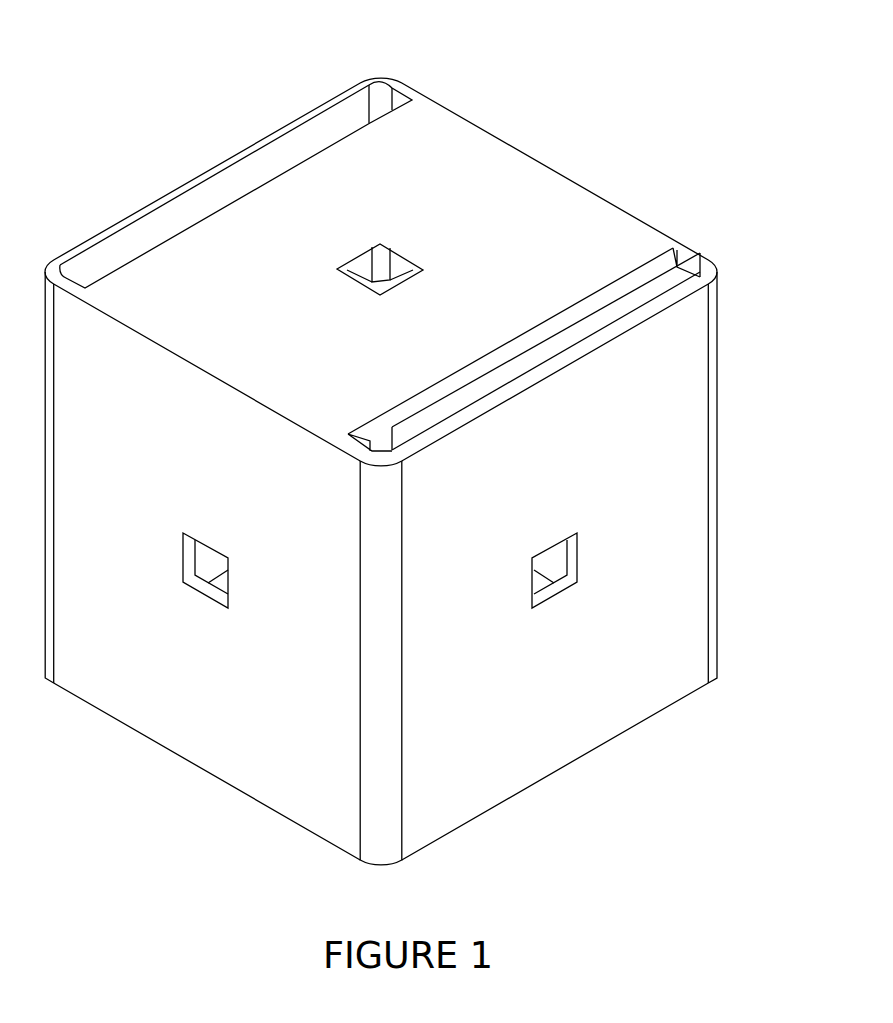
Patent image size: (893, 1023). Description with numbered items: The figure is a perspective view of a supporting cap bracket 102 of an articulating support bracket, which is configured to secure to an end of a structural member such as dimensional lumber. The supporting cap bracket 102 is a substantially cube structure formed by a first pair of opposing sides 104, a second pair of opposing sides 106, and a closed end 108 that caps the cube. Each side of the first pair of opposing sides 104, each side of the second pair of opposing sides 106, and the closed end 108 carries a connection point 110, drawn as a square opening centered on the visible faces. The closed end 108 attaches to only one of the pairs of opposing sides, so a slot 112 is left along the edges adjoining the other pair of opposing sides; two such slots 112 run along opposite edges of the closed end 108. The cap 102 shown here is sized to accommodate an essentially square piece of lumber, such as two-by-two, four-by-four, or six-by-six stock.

The supporting cap bracket 102 is at (146, 42).
The first pair of opposing sides 104 is at (606, 199).
The second pair of opposing sides 106 is at (188, 179).
The closed end 108 is at (276, 287).
The connection points 110 is at (407, 282).
The slot 112 is at (333, 108).